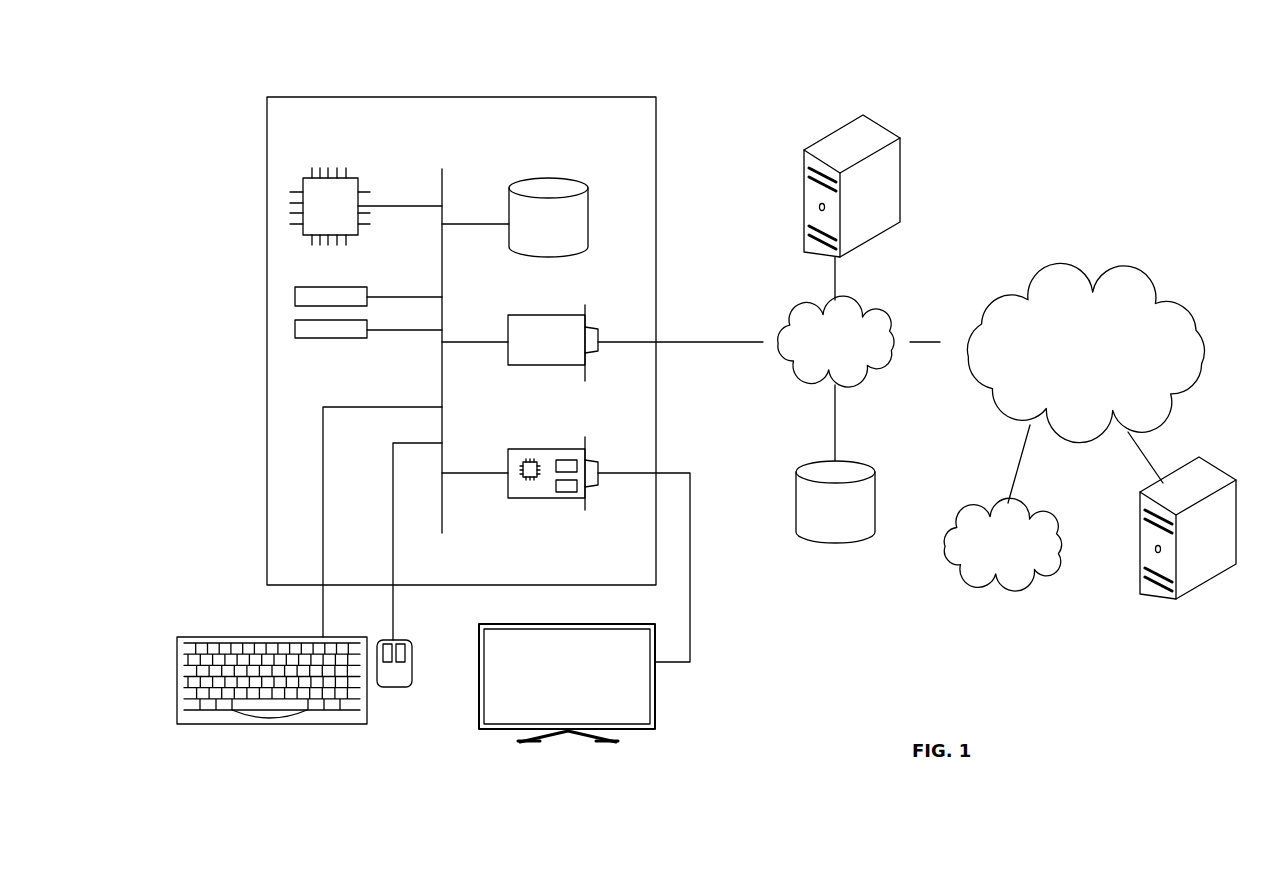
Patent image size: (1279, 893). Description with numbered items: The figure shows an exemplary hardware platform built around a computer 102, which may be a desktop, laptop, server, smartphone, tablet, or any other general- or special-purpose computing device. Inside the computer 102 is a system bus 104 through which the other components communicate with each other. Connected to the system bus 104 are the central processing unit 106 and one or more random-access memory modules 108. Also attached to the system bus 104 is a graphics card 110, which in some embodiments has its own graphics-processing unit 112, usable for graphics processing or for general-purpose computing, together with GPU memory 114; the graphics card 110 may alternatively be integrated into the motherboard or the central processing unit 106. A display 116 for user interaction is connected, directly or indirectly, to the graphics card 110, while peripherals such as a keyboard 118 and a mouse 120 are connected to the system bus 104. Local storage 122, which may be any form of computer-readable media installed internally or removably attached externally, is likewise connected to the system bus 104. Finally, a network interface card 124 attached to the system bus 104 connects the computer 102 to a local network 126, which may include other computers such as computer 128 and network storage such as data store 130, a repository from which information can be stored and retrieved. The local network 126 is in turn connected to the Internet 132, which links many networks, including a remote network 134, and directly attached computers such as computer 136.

The computer 102 is at (613, 97).
The system bus 104 is at (443, 178).
The central processing unit (CPU) 106 is at (358, 175).
The random-access memory (RAM) modules 108 is at (367, 325).
The graphics card 110 is at (549, 475).
The graphics-processing unit (GPU) 112 is at (528, 480).
The GPU memory 114 is at (565, 492).
The display 116 is at (655, 712).
The keyboard 118 is at (275, 724).
The mouse 120 is at (392, 695).
The local storage 122 is at (588, 205).
The network interface card (NIC) 124 is at (508, 325).
The local network 126 is at (883, 300).
The computer 128 is at (890, 122).
The data store 130 is at (865, 463).
The Internet 132 is at (1127, 263).
The remote network 134 is at (1057, 505).
The computer 136 is at (1215, 468).